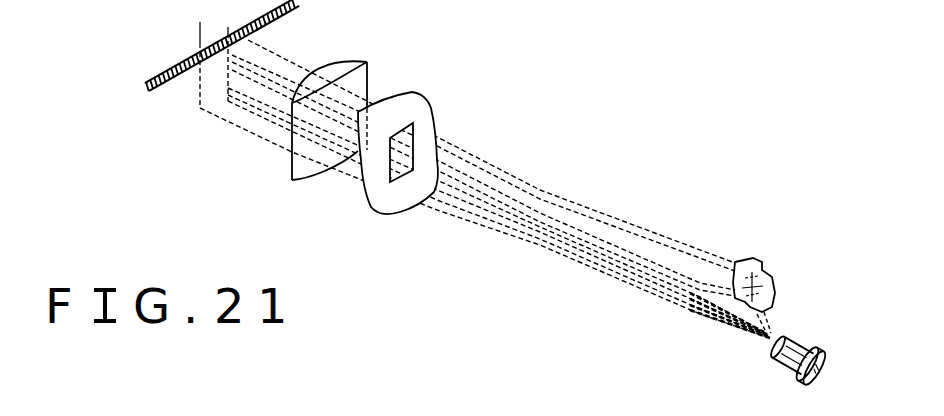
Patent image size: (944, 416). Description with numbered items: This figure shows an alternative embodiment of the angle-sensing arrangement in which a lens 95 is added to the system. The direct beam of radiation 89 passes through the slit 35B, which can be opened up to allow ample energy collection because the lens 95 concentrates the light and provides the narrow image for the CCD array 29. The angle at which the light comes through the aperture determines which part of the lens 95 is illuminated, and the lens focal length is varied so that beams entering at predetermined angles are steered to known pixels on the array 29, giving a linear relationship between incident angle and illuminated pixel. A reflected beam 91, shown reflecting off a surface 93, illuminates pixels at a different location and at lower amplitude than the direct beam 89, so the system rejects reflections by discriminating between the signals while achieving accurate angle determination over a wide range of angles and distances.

The CCD array 29 is at (147, 87).
The direct beam of radiation 89 is at (267, 45).
The reflected beam 91 is at (240, 123).
The surface 93 is at (772, 274).
The lens 95 is at (368, 73).
The slit 35B is at (390, 160).